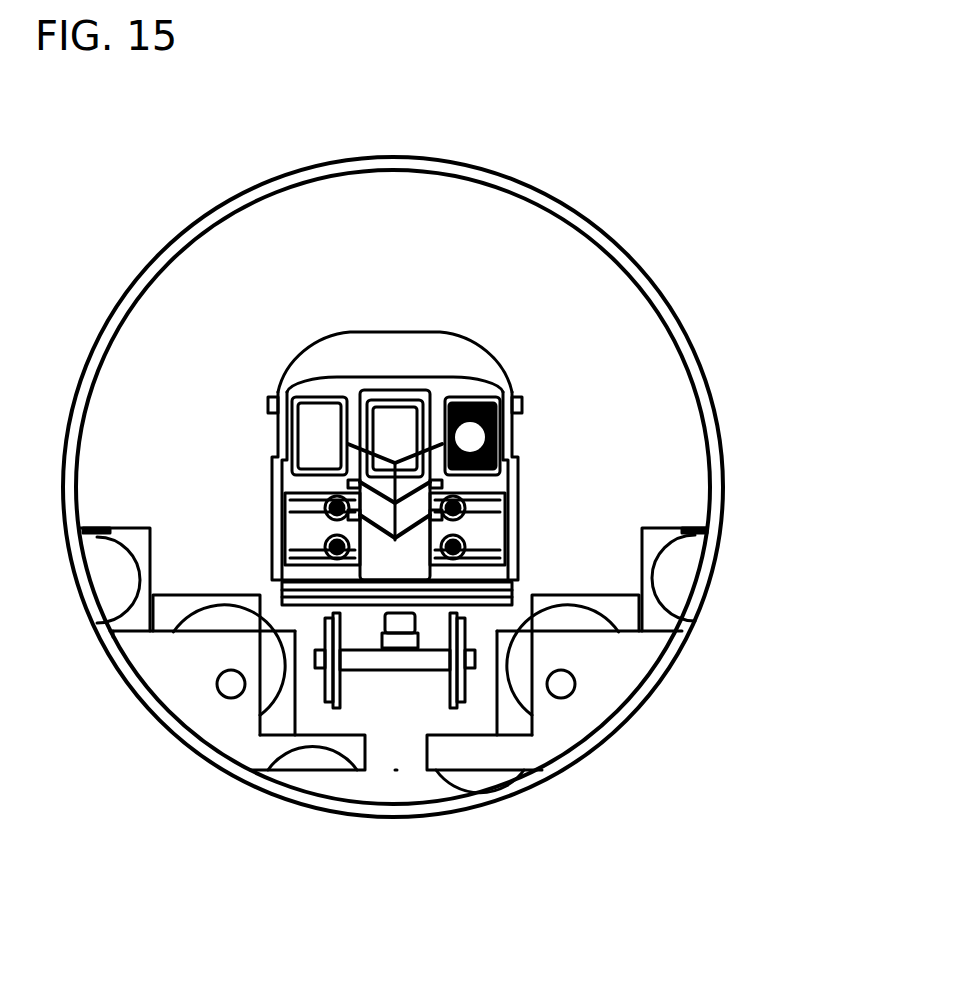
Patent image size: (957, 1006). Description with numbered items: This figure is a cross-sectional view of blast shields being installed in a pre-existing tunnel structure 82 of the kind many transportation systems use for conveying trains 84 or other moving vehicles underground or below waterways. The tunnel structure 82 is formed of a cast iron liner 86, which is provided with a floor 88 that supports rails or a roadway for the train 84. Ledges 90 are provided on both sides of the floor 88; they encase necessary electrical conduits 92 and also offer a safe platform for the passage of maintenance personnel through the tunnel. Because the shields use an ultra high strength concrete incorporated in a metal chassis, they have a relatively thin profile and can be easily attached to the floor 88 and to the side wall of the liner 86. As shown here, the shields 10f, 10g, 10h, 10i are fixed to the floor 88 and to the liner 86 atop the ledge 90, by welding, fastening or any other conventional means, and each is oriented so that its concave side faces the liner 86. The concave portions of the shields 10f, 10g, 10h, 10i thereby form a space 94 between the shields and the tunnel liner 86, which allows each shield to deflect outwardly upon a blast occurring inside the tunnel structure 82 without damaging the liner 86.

The tunnel structure 82 is at (165, 212).
The train 84 is at (523, 392).
The cast iron liner 86 is at (580, 215).
The floor 88 is at (428, 783).
The ledge 90 is at (645, 650).
The electrical conduit 92 is at (555, 700).
The space 94 is at (683, 587).
The shield 10f is at (137, 620).
The shield 10g is at (202, 665).
The shield 10h is at (173, 817).
The shield 10i is at (484, 764).